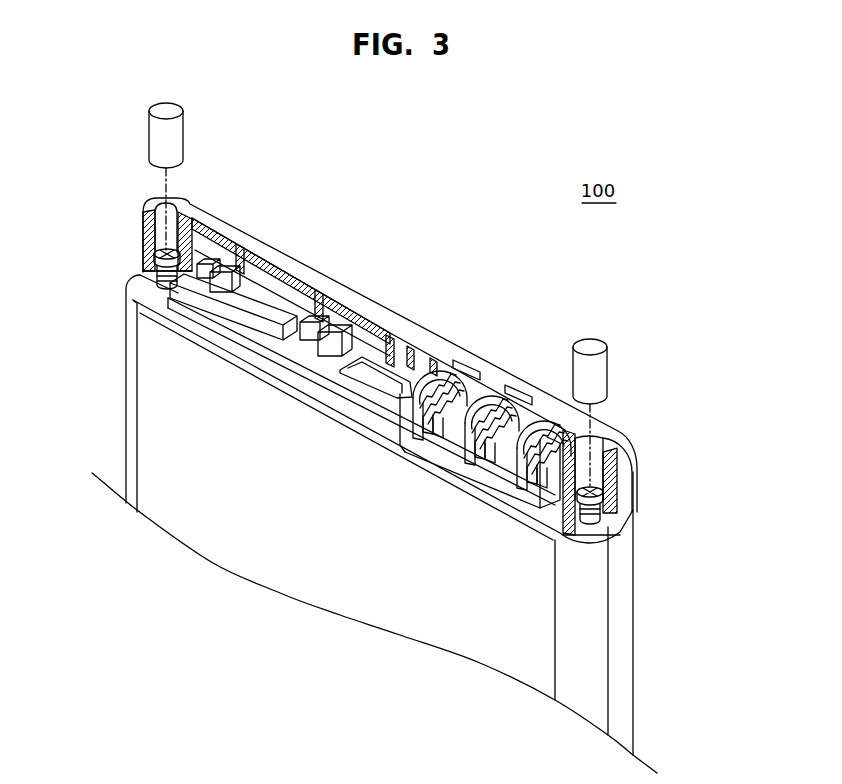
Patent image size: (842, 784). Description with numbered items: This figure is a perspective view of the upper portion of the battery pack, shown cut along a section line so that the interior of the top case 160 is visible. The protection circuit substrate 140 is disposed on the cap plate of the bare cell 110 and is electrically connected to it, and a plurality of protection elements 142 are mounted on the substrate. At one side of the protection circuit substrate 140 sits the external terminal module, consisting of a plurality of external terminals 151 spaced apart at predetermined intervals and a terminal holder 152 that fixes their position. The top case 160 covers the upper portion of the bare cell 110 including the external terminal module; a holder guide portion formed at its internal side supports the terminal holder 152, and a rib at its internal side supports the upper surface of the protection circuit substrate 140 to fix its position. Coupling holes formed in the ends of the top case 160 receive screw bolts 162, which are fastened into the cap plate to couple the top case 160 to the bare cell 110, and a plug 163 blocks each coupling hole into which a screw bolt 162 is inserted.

The bare cell 110 is at (112, 392).
The protection circuit substrate 140 is at (398, 414).
The protection elements 142 is at (330, 341).
The external terminals 151 is at (471, 460).
The terminal holder 152 is at (500, 478).
The top case 160 is at (268, 232).
The screw bolt 162 is at (156, 253).
The plug 163 is at (160, 133).